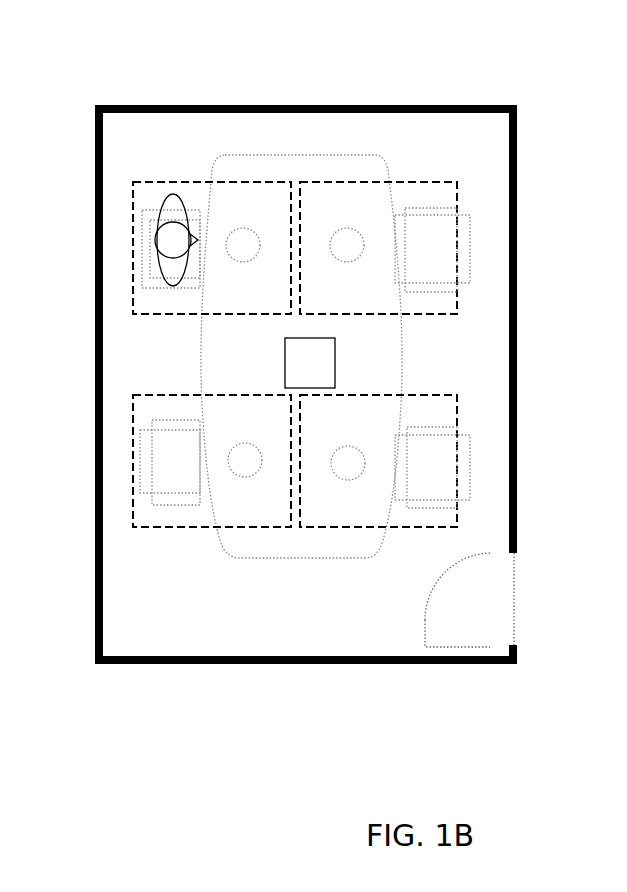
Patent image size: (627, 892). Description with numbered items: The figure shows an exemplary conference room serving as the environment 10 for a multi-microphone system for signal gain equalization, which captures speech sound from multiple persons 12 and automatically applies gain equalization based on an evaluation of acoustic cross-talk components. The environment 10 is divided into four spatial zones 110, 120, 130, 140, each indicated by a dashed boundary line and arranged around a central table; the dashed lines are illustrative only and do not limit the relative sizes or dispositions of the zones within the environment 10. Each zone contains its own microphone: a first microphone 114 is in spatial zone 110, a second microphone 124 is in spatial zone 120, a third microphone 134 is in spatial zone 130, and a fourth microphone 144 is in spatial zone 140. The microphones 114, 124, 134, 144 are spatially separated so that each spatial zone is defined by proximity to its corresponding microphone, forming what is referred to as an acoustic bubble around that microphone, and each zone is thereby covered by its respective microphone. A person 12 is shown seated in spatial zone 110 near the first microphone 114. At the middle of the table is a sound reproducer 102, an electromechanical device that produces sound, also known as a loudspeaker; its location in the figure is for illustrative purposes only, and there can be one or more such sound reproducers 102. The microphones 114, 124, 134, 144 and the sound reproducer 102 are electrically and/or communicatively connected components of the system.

The environment 10 is at (466, 548).
The person 12 is at (175, 268).
The sound reproducer 102 is at (303, 362).
The spatial zone 110 is at (150, 235).
The first microphone 114 is at (240, 243).
The spatial zone 120 is at (433, 243).
The second microphone 124 is at (348, 243).
The spatial zone 130 is at (183, 465).
The third microphone 134 is at (248, 455).
The spatial zone 140 is at (445, 462).
The fourth microphone 144 is at (350, 463).